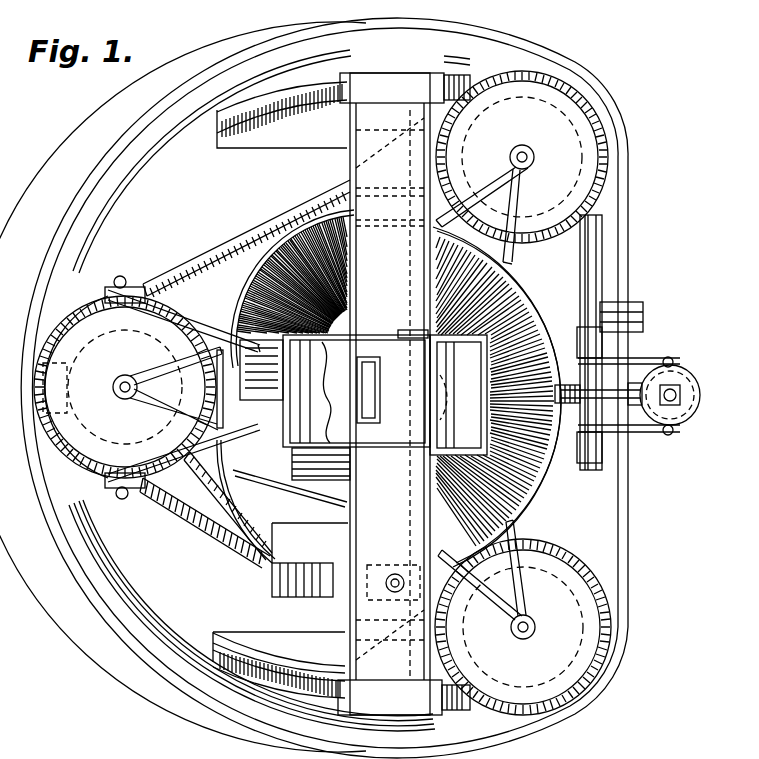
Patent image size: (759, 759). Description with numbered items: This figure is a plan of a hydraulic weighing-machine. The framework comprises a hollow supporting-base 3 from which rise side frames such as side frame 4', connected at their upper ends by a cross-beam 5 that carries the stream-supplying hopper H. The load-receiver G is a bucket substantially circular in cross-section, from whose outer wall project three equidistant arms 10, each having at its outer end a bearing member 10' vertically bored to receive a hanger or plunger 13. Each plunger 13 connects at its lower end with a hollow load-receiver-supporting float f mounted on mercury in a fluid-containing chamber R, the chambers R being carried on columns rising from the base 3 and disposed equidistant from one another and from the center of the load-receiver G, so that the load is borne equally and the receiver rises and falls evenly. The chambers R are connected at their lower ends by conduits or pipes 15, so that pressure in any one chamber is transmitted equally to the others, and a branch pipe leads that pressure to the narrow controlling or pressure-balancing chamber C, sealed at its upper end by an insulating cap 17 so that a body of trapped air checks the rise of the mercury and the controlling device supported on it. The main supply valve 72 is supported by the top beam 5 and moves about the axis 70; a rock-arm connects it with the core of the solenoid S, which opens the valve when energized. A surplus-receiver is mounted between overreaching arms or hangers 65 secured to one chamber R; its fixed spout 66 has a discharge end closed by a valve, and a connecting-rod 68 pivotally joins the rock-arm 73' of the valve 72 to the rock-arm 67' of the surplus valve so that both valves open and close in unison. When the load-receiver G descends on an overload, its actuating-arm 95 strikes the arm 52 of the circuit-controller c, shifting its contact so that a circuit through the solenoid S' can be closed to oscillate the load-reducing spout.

The hollow supporting-base 3 is at (98, 186).
The side frame 4' is at (341, 387).
The cross-beam 5 is at (391, 394).
The arm 10 is at (338, 393).
The bearing member 10' is at (326, 388).
The hanger or plunger 13 is at (522, 152).
The conduit or pipe 15 is at (600, 270).
The cap 17 is at (690, 393).
The contact-arm of circuit-controller 52 is at (595, 398).
The overreaching arms or hangers 65 is at (136, 289).
The surplus-receiver spout 66 is at (262, 395).
The rock-arm 67' is at (228, 506).
The connecting-rod 68 is at (300, 478).
The axis of movement of the valve 70 is at (418, 330).
The valve 72 is at (495, 406).
The rock-arm 73' is at (393, 557).
The actuating-arm 95 is at (585, 392).
The load-receiver G is at (292, 246).
The hopper H is at (398, 335).
The fluid-containing chamber R is at (588, 92).
The load-receiver-supporting float f is at (527, 100).
The controlling or pressure-balancing chamber C is at (638, 382).
The circuit-controller c is at (600, 403).
The solenoid S is at (282, 501).
The solenoid S' is at (310, 571).
The curved support frame S''' is at (497, 397).